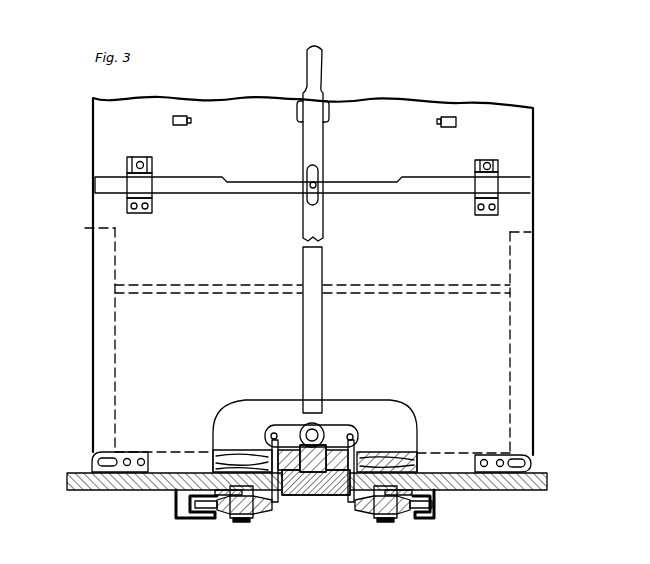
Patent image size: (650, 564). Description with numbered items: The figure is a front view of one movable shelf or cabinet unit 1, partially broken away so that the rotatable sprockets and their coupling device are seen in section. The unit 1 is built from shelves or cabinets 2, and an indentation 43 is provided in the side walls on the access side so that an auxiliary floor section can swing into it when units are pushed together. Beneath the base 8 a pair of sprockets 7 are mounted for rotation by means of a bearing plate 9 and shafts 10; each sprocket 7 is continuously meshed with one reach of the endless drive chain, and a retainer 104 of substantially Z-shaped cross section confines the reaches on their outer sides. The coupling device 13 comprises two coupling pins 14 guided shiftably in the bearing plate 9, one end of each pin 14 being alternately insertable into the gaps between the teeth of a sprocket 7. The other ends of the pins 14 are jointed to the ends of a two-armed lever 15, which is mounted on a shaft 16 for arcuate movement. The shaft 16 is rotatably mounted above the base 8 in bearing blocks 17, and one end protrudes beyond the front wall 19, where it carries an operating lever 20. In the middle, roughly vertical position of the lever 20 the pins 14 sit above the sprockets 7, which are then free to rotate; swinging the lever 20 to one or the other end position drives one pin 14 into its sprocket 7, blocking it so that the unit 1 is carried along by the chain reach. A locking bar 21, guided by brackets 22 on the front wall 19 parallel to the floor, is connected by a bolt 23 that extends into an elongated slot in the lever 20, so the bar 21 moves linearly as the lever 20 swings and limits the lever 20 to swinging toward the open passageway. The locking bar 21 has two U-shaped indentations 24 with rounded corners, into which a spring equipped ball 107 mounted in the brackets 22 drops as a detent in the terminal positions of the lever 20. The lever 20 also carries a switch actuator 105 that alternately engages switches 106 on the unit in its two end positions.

The shelf or cabinet unit 1 is at (236, 253).
The shelf or cabinet 2 is at (88, 218).
The sprocket 7 is at (255, 517).
The base 8 is at (418, 443).
The bearing plate 9 is at (322, 496).
The shaft 10 is at (240, 505).
The coupling device 13 is at (339, 421).
The coupling pin 14 is at (275, 450).
The two-armed lever 15 is at (292, 436).
The shaft 16 is at (296, 431).
The bearing block 17 is at (303, 492).
The front wall 19 is at (495, 393).
The operating lever 20 is at (316, 267).
The locking bar 21 is at (381, 181).
The bracket 22 is at (138, 183).
The bolt 23 is at (318, 184).
The U-shaped indentation 24 is at (220, 181).
The indentation 43 is at (105, 352).
The retainer 104 is at (188, 508).
The switch actuator 105 is at (300, 112).
The switch 106 is at (173, 120).
The spring equipped ball 107 is at (123, 165).